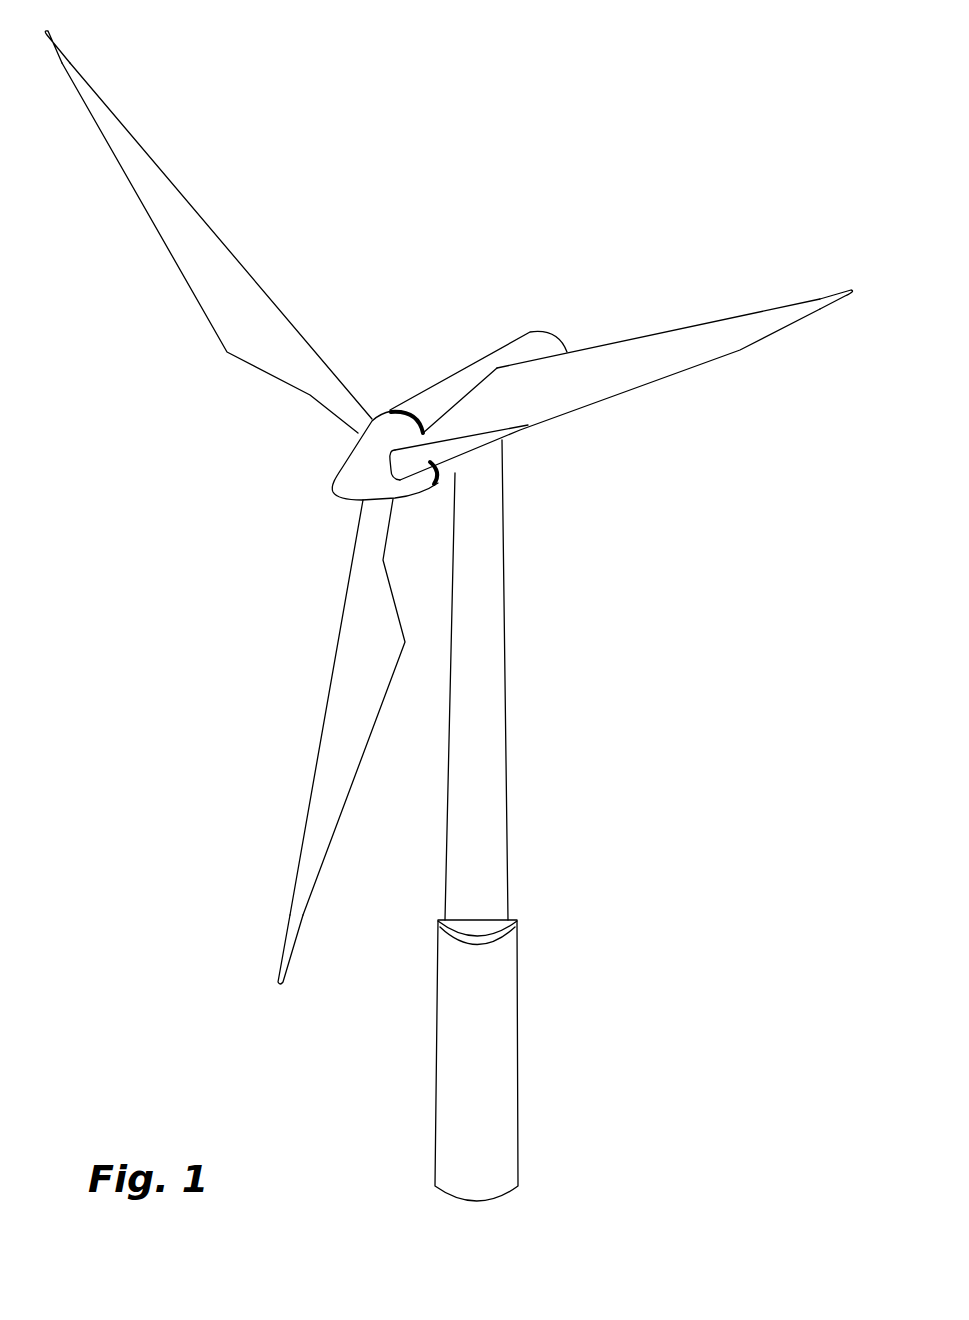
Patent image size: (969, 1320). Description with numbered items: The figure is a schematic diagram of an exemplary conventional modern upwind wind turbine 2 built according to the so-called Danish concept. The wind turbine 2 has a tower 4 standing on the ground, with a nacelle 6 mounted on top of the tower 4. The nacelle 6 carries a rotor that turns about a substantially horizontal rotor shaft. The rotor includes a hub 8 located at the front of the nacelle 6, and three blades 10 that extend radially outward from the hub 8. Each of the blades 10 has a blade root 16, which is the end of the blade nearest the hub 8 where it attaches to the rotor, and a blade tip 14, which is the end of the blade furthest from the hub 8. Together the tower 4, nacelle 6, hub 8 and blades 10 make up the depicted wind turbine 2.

The wind turbine 2 is at (598, 766).
The tower 4 is at (495, 685).
The nacelle 6 is at (443, 392).
The hub 8 is at (352, 475).
The blades 10 is at (240, 327).
The blade tip 14 is at (85, 89).
The blade root 16 is at (358, 433).